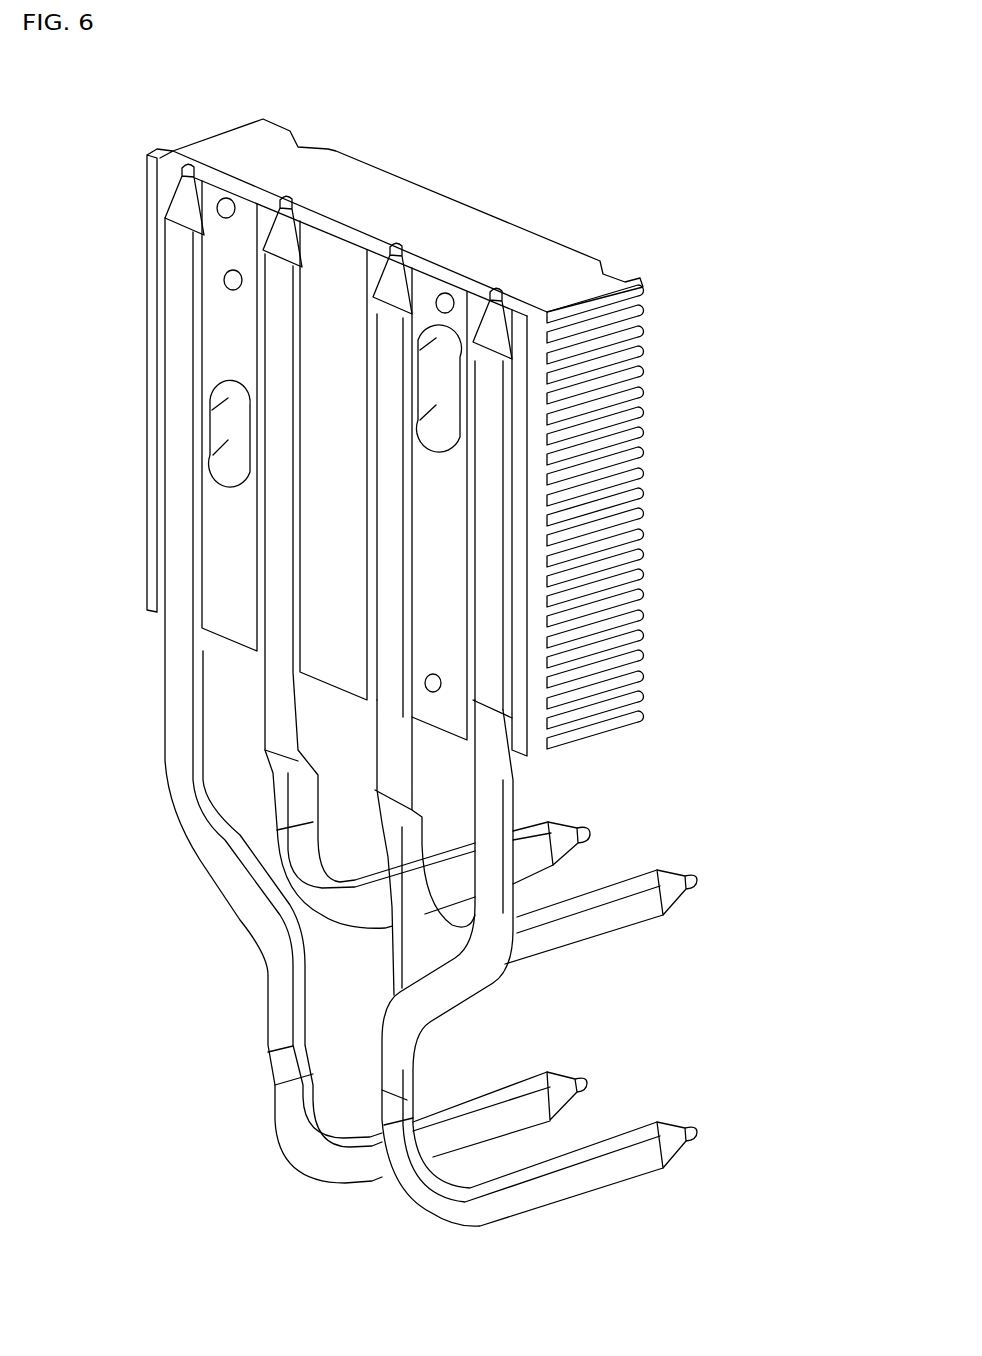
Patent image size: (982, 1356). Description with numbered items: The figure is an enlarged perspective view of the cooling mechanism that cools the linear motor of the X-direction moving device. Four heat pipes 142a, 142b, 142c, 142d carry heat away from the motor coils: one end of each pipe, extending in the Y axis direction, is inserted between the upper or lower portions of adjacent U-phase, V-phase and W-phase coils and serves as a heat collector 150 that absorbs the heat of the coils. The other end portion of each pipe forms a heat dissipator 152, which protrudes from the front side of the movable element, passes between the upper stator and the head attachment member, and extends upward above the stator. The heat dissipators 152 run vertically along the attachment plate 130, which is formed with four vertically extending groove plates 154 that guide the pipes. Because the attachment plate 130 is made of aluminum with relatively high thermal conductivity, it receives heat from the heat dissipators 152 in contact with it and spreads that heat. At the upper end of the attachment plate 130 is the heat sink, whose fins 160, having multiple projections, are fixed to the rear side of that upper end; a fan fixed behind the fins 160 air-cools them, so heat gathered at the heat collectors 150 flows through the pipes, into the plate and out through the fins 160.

The attachment plate 130 is at (343, 250).
The heat pipe 142a is at (612, 811).
The heat pipe 142b is at (725, 934).
The heat pipe 142c is at (586, 1051).
The heat pipe 142d is at (703, 1190).
The heat collector 150 is at (655, 1010).
The heat dissipator 152 is at (170, 663).
The groove plate 154 is at (170, 150).
The fins 160 is at (491, 238).